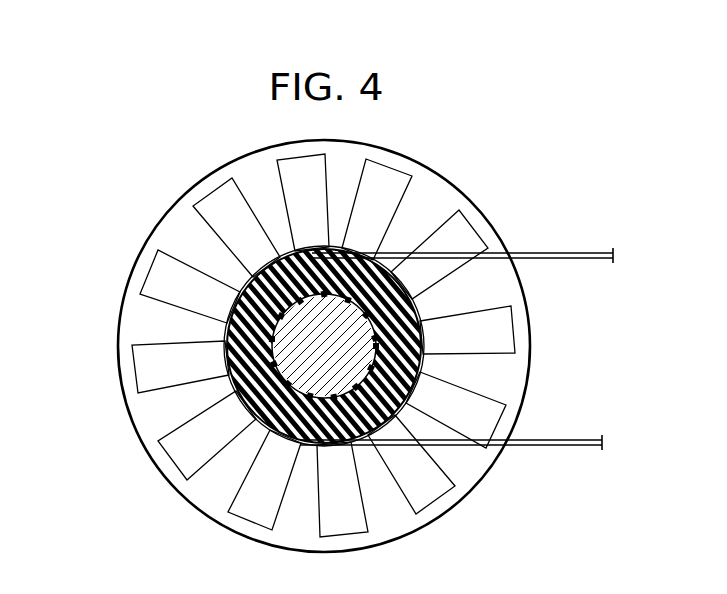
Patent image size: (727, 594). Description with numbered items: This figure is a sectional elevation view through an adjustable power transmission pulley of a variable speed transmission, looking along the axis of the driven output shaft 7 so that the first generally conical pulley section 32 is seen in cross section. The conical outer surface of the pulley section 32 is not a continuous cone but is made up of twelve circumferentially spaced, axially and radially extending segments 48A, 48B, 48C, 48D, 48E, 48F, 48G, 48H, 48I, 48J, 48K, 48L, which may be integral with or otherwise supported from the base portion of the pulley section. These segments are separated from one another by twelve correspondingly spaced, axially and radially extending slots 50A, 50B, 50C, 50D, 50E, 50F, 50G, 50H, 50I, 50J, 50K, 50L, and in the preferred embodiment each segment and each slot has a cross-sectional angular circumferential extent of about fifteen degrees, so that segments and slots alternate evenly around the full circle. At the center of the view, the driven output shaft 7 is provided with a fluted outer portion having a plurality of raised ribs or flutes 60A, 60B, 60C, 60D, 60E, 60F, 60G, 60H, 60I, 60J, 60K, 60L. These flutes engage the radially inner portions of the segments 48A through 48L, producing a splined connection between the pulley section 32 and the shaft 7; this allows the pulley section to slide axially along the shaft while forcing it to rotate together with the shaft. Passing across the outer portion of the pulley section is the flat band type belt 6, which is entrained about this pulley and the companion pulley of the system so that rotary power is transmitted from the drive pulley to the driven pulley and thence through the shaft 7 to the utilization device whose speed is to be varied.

The flat band type belt 6 is at (548, 252).
The driven output shaft 7 is at (329, 360).
The first pulley section 32 is at (185, 159).
The segment 48A is at (333, 188).
The segment 48B is at (417, 211).
The segment 48C is at (469, 296).
The segment 48D is at (490, 385).
The segment 48E is at (445, 468).
The segment 48F is at (370, 513).
The segment 48G is at (281, 530).
The segment 48H is at (201, 495).
The segment 48I is at (151, 420).
The segment 48J is at (135, 332).
The segment 48K is at (167, 248).
The segment 48L is at (241, 191).
The slot 50A is at (285, 188).
The slot 50B is at (370, 195).
The slot 50C is at (445, 250).
The slot 50D is at (475, 335).
The slot 50E is at (463, 420).
The slot 50F is at (410, 500).
The slot 50G is at (318, 515).
The slot 50H is at (240, 520).
The slot 50I is at (171, 455).
The slot 50J is at (133, 370).
The slot 50K is at (150, 295).
The slot 50L is at (203, 222).
The flute 60A is at (317, 286).
The flute 60B is at (347, 291).
The flute 60C is at (398, 291).
The flute 60D is at (416, 338).
The flute 60E is at (414, 367).
The flute 60F is at (395, 405).
The flute 60G is at (357, 432).
The flute 60H is at (287, 430).
The flute 60I is at (237, 377).
The flute 60J is at (232, 354).
The flute 60K is at (239, 310).
The flute 60L is at (269, 272).